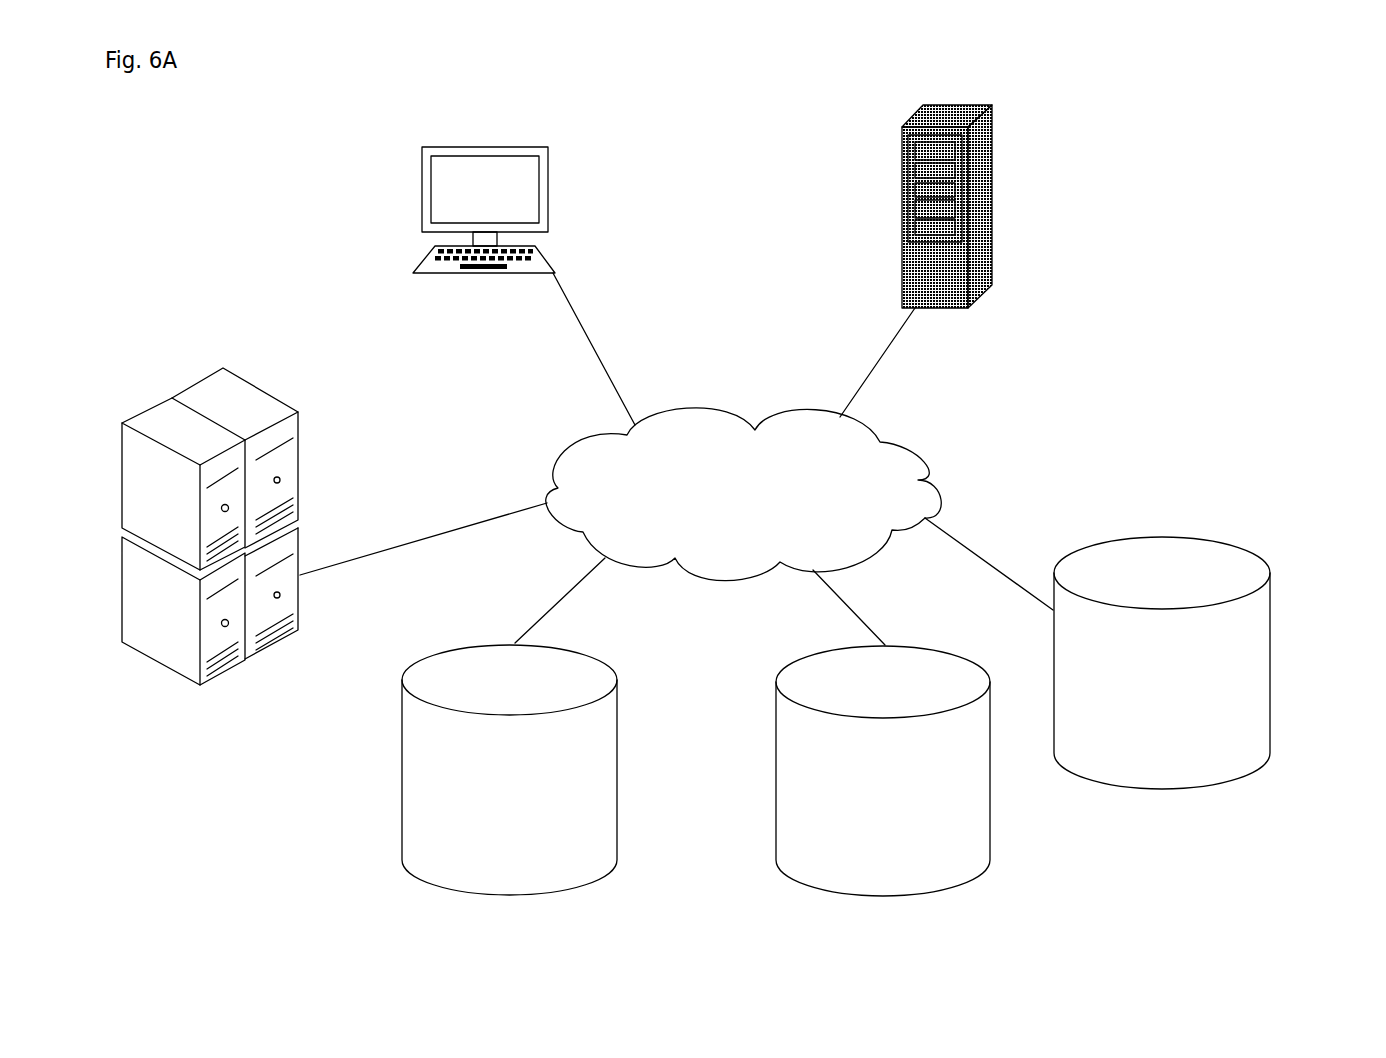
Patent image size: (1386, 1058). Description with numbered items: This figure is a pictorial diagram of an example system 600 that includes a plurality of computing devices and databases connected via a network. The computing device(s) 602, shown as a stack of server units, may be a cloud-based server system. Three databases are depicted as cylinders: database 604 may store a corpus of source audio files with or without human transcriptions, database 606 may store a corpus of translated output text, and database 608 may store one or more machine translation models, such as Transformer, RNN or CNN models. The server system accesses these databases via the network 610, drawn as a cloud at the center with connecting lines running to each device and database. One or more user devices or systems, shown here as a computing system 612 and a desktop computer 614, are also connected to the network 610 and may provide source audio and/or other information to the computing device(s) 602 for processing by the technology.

The system 600 is at (177, 124).
The computing device(s) 602 is at (222, 369).
The database 604 is at (402, 790).
The database 606 is at (776, 783).
The database 608 is at (1270, 692).
The network 610 is at (697, 573).
The computing system 612 is at (902, 213).
The desktop computer 614 is at (420, 178).